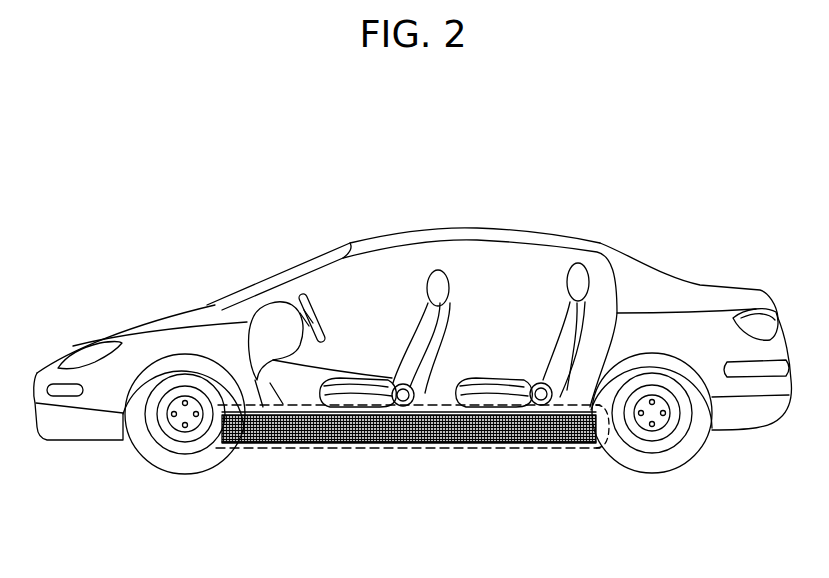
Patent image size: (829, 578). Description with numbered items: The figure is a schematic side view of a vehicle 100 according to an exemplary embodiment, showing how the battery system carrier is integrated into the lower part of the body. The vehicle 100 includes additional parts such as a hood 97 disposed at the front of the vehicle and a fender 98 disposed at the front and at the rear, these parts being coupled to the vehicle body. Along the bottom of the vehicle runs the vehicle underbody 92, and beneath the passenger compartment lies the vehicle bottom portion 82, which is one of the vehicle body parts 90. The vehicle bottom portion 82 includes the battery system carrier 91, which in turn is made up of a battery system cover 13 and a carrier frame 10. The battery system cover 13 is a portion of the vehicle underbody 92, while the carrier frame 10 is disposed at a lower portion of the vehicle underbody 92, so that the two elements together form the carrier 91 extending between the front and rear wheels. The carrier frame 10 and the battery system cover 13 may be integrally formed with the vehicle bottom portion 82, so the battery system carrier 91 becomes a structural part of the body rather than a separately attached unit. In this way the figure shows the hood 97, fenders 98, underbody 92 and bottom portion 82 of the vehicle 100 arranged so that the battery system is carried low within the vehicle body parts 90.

The vehicle 100 is at (418, 168).
The hood 97 is at (165, 327).
The fender 98 is at (102, 397).
The carrier frame 10 is at (233, 452).
The battery system cover 13 is at (300, 445).
The battery system carrier 91 is at (312, 506).
The vehicle underbody 92 is at (407, 442).
The vehicle bottom portion 82 is at (552, 450).
The vehicle body parts 90 is at (412, 459).